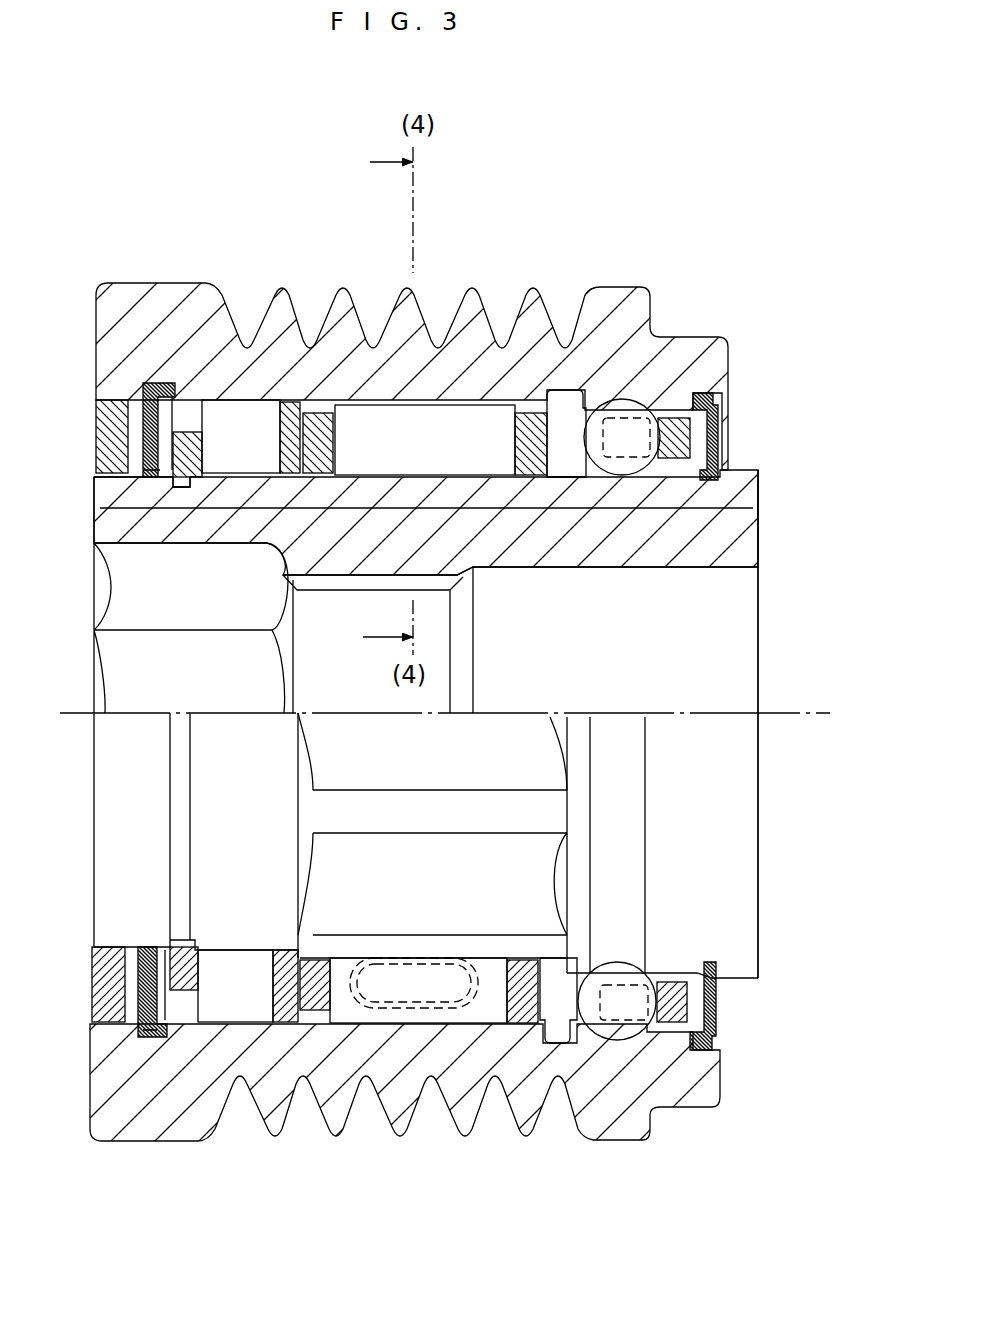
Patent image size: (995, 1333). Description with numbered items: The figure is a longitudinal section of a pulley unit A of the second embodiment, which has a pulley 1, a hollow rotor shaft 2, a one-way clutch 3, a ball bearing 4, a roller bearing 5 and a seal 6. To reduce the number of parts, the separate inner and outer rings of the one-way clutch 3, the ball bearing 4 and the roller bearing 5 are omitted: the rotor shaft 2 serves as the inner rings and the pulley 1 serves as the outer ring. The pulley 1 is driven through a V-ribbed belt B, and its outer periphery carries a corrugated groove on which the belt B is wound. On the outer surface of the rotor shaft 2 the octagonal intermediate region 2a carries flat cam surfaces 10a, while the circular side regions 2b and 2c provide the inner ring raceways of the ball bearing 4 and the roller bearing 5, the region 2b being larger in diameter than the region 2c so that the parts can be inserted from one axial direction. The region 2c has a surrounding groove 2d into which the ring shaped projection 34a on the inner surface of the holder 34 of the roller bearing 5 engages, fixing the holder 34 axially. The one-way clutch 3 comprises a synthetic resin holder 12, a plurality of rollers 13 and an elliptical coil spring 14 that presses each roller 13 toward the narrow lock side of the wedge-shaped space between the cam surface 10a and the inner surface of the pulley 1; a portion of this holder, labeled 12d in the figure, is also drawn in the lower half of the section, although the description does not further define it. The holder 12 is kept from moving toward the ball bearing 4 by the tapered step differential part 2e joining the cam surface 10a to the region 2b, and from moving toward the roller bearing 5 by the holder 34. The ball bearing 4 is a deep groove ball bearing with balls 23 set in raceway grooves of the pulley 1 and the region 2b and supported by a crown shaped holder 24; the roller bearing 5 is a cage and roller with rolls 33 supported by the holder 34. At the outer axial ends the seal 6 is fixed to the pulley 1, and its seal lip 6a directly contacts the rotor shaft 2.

The pulley 1 is at (643, 300).
The rotor shaft 2 is at (747, 540).
The intermediate region 2a is at (460, 573).
The large diameter region 2b is at (691, 724).
The small diameter region 2c is at (152, 508).
The surrounding groove 2d is at (193, 485).
The tapered step differential part 2e is at (553, 472).
The one-way clutch 3 is at (422, 621).
The ball bearing 4 is at (684, 633).
The roller bearing 5 is at (220, 395).
The seal 6 is at (147, 423).
The seal lip 6a is at (148, 472).
The cam surface 10a is at (440, 475).
The holder 12 is at (535, 412).
The engaging portion of outer ring 12d is at (310, 997).
The roller 13 is at (392, 422).
The elliptical coil spring 14 is at (418, 957).
The ball 23 is at (650, 400).
The crown shaped holder 24 is at (677, 393).
The roll 33 is at (257, 418).
The holder 34 is at (290, 417).
The ring shaped projection 34a is at (175, 493).
The pulley unit A is at (720, 223).
The V-ribbed belt B is at (210, 273).